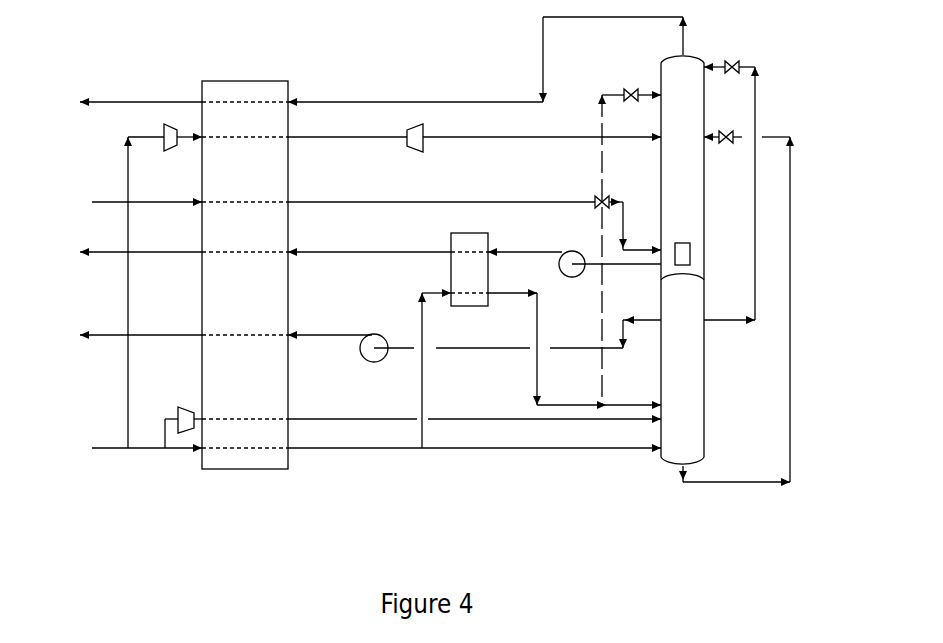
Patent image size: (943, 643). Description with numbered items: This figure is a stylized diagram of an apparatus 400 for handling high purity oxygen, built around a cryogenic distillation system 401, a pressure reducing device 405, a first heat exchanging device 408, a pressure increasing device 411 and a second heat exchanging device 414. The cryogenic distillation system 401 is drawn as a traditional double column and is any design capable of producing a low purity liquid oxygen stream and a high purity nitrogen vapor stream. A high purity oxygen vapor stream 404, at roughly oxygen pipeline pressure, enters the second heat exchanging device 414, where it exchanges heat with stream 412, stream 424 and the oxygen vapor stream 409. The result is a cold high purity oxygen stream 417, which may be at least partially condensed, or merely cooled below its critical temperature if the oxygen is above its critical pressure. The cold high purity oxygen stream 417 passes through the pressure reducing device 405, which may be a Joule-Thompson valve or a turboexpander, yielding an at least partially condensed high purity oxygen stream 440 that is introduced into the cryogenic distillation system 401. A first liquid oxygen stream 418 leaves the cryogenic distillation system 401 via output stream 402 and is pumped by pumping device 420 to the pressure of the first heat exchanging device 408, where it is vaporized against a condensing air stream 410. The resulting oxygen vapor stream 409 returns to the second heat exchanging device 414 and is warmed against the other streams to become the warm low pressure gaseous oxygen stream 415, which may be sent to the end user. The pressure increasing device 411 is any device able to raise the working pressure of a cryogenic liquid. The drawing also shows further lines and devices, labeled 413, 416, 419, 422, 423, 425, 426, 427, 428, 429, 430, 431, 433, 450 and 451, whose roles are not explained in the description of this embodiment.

The apparatus 400 is at (113, 67).
The cryogenic distillation system 401 is at (708, 360).
The output stream 402 is at (616, 256).
The high purity oxygen vapor stream 404 is at (124, 200).
The pressure reducing device 405 is at (598, 197).
The first heat exchanging device 408 is at (480, 303).
The oxygen vapor stream 409 is at (369, 243).
The condensing air stream 410 is at (420, 368).
The pressure increasing device 411 is at (373, 360).
The stream 412 is at (330, 330).
The inlet stream 413 is at (129, 446).
The second heat exchanging device 414 is at (245, 288).
The warm low pressure gaseous oxygen stream 415 is at (125, 250).
The product stream 416 is at (125, 335).
The cold high purity oxygen stream 417 is at (441, 189).
The first liquid oxygen stream 418 is at (525, 243).
The subcooled stream 419 is at (574, 349).
The pumping device 420 is at (569, 274).
The bottoms liquid stream 422 is at (736, 308).
The vapor recycle stream 423 is at (744, 192).
The stream 424 is at (487, 61).
The waste gas stream 425 is at (125, 100).
The compressed stream 426 is at (147, 466).
The cooled stream 427 is at (474, 441).
The recycle stream 428 is at (141, 292).
The expanded air stream 429 is at (542, 131).
The compressor 430 is at (169, 134).
The turbine expander 431 is at (413, 134).
The compressed air stream 433 is at (292, 131).
The at least partially condensed high purity oxygen stream 440 is at (629, 249).
The compressor / recycle line 450 is at (155, 393).
The compressed recycle stream 451 is at (427, 410).